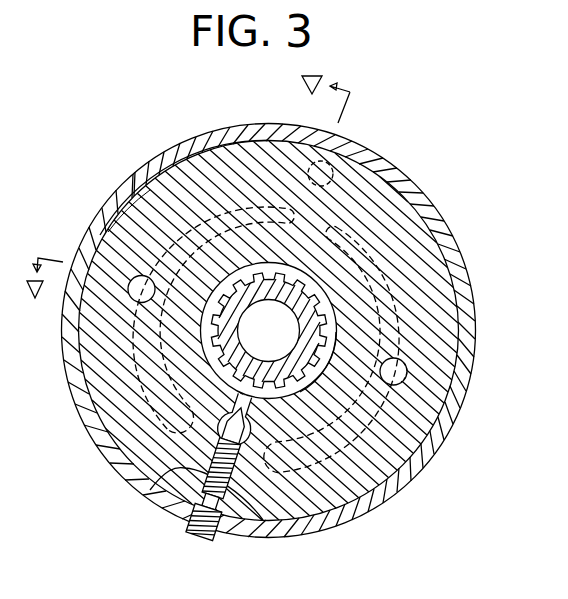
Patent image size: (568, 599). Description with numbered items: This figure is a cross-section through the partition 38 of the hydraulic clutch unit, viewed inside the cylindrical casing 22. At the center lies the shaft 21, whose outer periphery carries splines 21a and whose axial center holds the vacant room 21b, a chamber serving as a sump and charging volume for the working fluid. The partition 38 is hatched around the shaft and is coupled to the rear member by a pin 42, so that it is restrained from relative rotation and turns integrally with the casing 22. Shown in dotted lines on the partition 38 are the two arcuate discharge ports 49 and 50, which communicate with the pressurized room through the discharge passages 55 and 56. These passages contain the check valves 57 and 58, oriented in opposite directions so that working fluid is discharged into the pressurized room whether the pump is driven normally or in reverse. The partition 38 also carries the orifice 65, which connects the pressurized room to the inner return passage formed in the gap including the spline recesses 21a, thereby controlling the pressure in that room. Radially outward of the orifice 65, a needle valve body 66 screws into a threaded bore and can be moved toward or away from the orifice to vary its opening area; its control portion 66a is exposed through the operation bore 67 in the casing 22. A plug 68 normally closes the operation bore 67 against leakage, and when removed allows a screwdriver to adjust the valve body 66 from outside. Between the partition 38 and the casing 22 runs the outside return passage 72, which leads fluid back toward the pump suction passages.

The shaft 21 is at (290, 374).
The splines 21a is at (302, 376).
The vacant room 21b is at (269, 331).
The cylindrical casing 22 is at (413, 177).
The partition 38 is at (415, 235).
The pin 42 is at (335, 155).
The discharge port 49 is at (216, 212).
The discharge port 50 is at (380, 297).
The discharge passage 55 is at (136, 294).
The discharge passage 56 is at (406, 380).
The check valve 57 is at (105, 233).
The check valve 58 is at (398, 366).
The orifice 65 is at (259, 398).
The needle valve body 66 is at (150, 490).
The control portion 66a is at (203, 507).
The operation bore 67 is at (226, 538).
The plug 68 is at (194, 528).
The outside return passage 72 is at (145, 190).